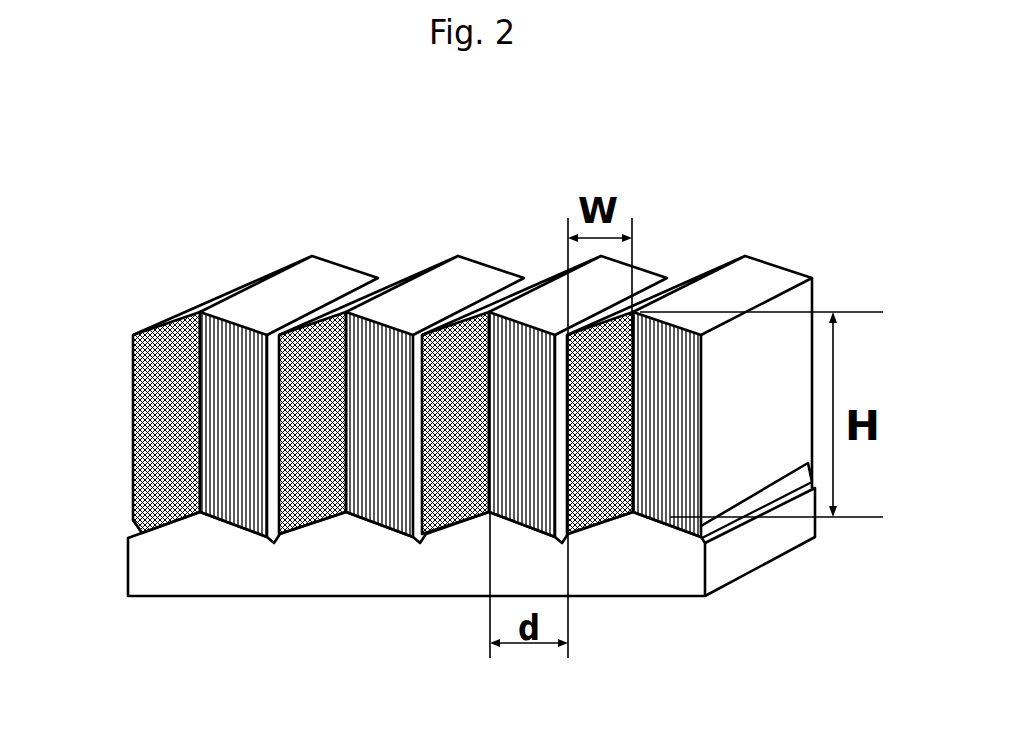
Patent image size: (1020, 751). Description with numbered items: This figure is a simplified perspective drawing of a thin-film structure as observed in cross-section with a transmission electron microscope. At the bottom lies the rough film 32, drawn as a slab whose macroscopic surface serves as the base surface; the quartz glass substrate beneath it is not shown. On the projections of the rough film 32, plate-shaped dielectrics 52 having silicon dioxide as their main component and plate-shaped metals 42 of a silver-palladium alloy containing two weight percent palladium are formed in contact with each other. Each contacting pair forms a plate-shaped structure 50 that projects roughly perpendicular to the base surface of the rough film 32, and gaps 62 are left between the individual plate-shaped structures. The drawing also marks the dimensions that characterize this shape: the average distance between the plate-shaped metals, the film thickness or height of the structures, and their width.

The rough film 32 is at (352, 573).
The plate-shaped metal 42 is at (158, 324).
The plate-shaped dielectric 52 is at (320, 287).
The gap 62 is at (477, 300).
The plate-shaped structure 50 is at (695, 242).